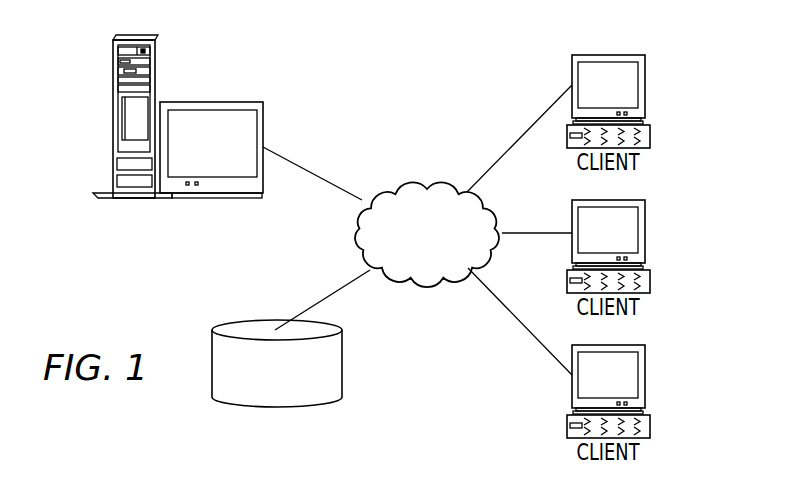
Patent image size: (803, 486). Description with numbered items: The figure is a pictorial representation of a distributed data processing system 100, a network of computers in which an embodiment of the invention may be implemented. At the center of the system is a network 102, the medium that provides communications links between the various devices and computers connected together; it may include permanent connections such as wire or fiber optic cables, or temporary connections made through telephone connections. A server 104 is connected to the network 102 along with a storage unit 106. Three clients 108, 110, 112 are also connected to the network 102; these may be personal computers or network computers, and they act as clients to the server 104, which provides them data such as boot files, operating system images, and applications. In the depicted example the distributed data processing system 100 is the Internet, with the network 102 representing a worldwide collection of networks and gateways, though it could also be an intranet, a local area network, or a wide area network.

The distributed data processing system 100 is at (478, 67).
The network 102 is at (398, 183).
The server 104 is at (112, 118).
The storage unit 106 is at (258, 404).
The client 108 is at (645, 87).
The client 110 is at (645, 232).
The client 112 is at (645, 377).